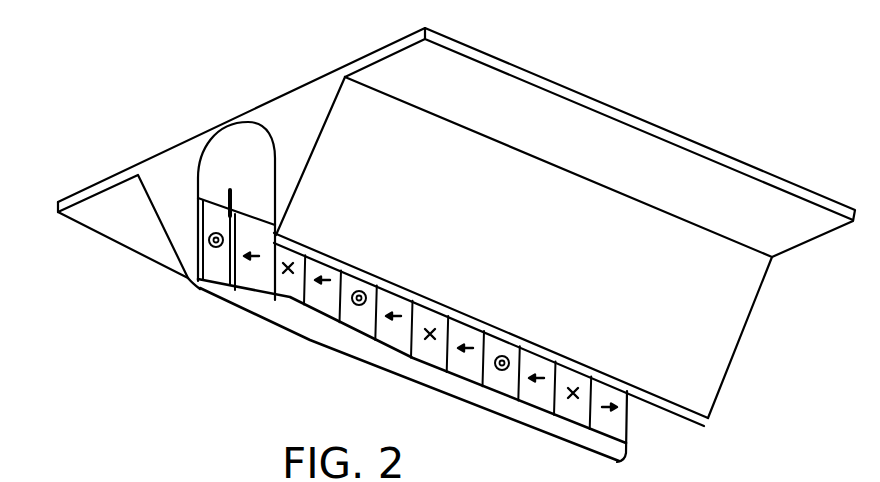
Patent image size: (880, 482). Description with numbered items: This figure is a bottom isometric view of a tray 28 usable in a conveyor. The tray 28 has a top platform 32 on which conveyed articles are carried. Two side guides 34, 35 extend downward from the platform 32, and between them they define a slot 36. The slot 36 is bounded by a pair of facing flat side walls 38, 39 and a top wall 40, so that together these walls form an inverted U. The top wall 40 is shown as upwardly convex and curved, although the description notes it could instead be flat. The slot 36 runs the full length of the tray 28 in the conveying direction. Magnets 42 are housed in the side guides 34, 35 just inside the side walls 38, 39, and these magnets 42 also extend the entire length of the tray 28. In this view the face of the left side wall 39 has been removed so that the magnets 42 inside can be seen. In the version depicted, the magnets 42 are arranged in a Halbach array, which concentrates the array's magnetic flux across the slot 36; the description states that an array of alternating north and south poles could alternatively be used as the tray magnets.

The tray 28 is at (150, 95).
The top platform 32 is at (485, 58).
The side guide 34 is at (713, 363).
The side guide 35 is at (177, 230).
The slot 36 is at (222, 252).
The side wall 38 is at (275, 206).
The side wall 39 is at (198, 220).
The top wall 40 is at (243, 133).
The magnets 42 is at (461, 377).